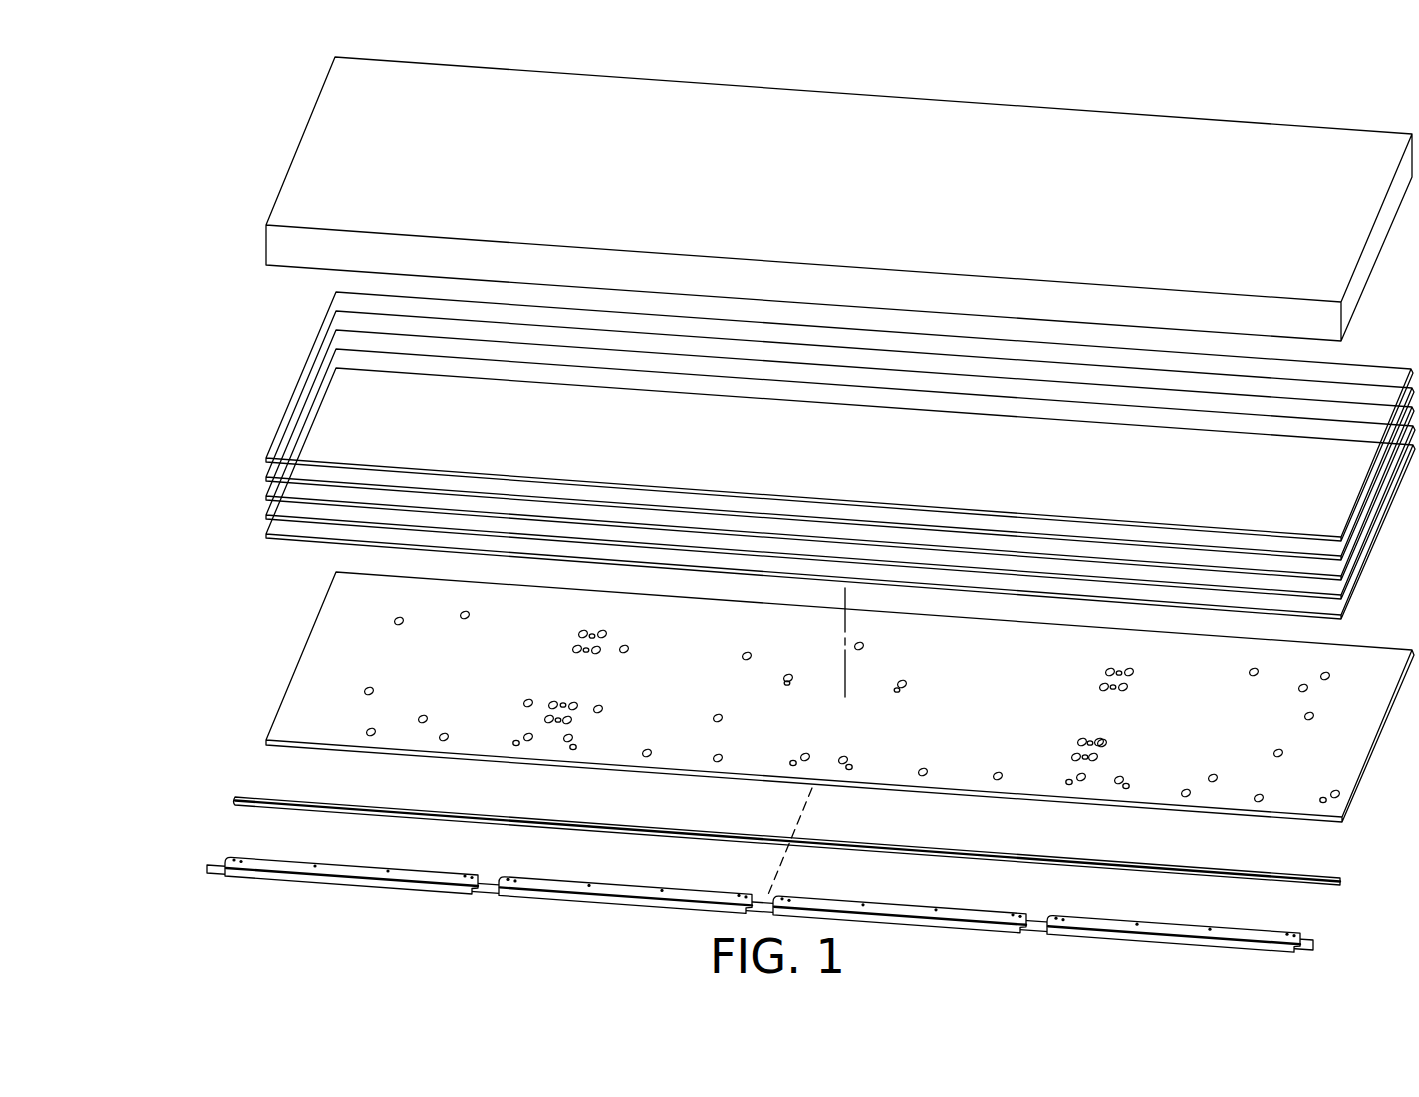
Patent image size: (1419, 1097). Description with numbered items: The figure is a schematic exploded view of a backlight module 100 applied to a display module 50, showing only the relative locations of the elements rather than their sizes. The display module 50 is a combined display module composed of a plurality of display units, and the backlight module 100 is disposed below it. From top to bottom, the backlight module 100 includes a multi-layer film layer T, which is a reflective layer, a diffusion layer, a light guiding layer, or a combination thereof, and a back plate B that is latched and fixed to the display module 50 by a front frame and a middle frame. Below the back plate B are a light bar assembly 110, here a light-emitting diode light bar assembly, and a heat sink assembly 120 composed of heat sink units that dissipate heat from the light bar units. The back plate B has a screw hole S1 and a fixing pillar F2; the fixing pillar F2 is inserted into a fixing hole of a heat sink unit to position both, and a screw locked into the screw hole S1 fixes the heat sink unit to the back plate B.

The display module 50 is at (240, 233).
The backlight module 100 is at (152, 487).
The film layer T is at (250, 456).
The back plate B is at (840, 697).
The light bar assembly 110 is at (216, 800).
The heat sink assembly 120 is at (224, 841).
The screw hole S1 is at (568, 738).
The fixing pillar F2 is at (573, 741).